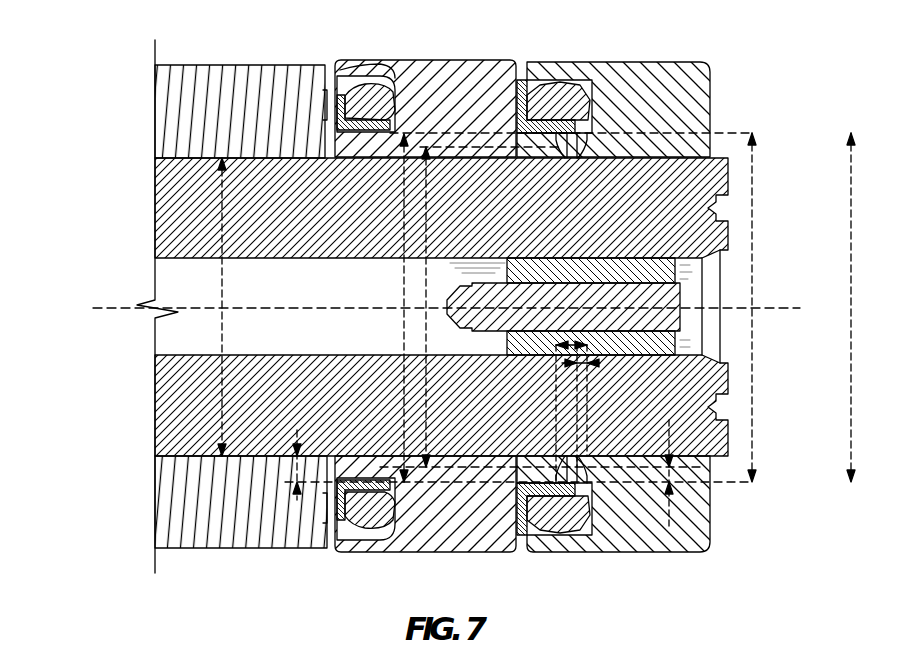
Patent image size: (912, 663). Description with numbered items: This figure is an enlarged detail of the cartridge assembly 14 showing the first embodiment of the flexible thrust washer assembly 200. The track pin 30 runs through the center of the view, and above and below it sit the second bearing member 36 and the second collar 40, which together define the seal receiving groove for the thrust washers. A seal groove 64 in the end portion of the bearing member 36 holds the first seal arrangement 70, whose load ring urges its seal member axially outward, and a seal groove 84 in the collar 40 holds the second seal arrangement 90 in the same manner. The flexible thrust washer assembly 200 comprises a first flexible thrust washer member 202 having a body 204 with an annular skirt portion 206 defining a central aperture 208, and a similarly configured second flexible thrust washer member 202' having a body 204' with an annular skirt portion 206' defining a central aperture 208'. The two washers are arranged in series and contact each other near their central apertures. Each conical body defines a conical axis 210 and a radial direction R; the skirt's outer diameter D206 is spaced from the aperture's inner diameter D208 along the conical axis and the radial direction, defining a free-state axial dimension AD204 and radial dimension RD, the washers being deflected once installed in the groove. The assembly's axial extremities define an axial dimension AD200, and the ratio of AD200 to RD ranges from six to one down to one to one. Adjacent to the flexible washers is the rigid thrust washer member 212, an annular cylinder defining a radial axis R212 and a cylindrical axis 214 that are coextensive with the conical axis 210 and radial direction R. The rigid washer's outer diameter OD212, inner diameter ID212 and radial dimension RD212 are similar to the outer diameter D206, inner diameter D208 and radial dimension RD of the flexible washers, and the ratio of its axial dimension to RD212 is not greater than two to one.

The cartridge assembly 14 is at (668, 44).
The track pin 30 is at (241, 306).
The second bearing member 36 is at (430, 546).
The second collar 40 is at (682, 540).
The seal groove 64 is at (335, 538).
The first seal arrangement 70 is at (358, 536).
The seal groove 84 is at (522, 528).
The second seal arrangement 90 is at (548, 532).
The flexible thrust washer assembly 200 is at (563, 452).
The first flexible thrust washer member 202 is at (580, 157).
The body 204 is at (580, 157).
The second flexible thrust washer member 202' is at (521, 499).
The body 204' is at (521, 499).
The annular skirt portion 206 is at (619, 165).
The annular skirt portion 206' is at (521, 165).
The central aperture 208 is at (596, 184).
The central aperture 208' is at (542, 184).
The conical axis 210 is at (231, 306).
The cylindrical axis 214 is at (121, 306).
The rigid thrust washer member 212 is at (513, 466).
The inner diameter ID212 is at (222, 322).
The outer diameter OD212 is at (404, 283).
The radial dimension RD212 is at (297, 428).
The inner diameter D208 is at (428, 360).
The outer diameter D206 is at (752, 262).
The axial dimension AD200 is at (575, 343).
The axial dimension AD204 is at (604, 365).
The radial dimension RD is at (668, 518).
The radial direction R is at (810, 307).
The radial axis R212 is at (851, 331).